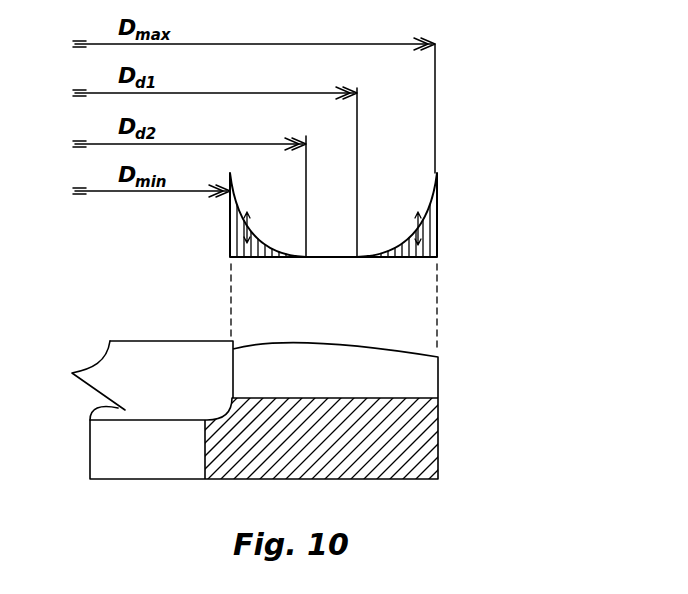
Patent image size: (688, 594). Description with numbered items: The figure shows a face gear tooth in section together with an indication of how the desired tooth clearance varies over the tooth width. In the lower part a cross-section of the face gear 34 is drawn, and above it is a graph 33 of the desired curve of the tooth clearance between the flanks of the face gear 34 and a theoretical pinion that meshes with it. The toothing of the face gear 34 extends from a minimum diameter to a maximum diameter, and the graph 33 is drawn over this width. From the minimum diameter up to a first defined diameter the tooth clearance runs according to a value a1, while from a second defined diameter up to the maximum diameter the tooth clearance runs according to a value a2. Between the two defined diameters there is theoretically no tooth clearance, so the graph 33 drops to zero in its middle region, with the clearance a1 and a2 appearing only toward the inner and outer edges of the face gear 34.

The graph 33 is at (455, 241).
The face gear 34 is at (455, 441).
The tooth clearance value a1 is at (243, 217).
The tooth clearance value a2 is at (420, 227).